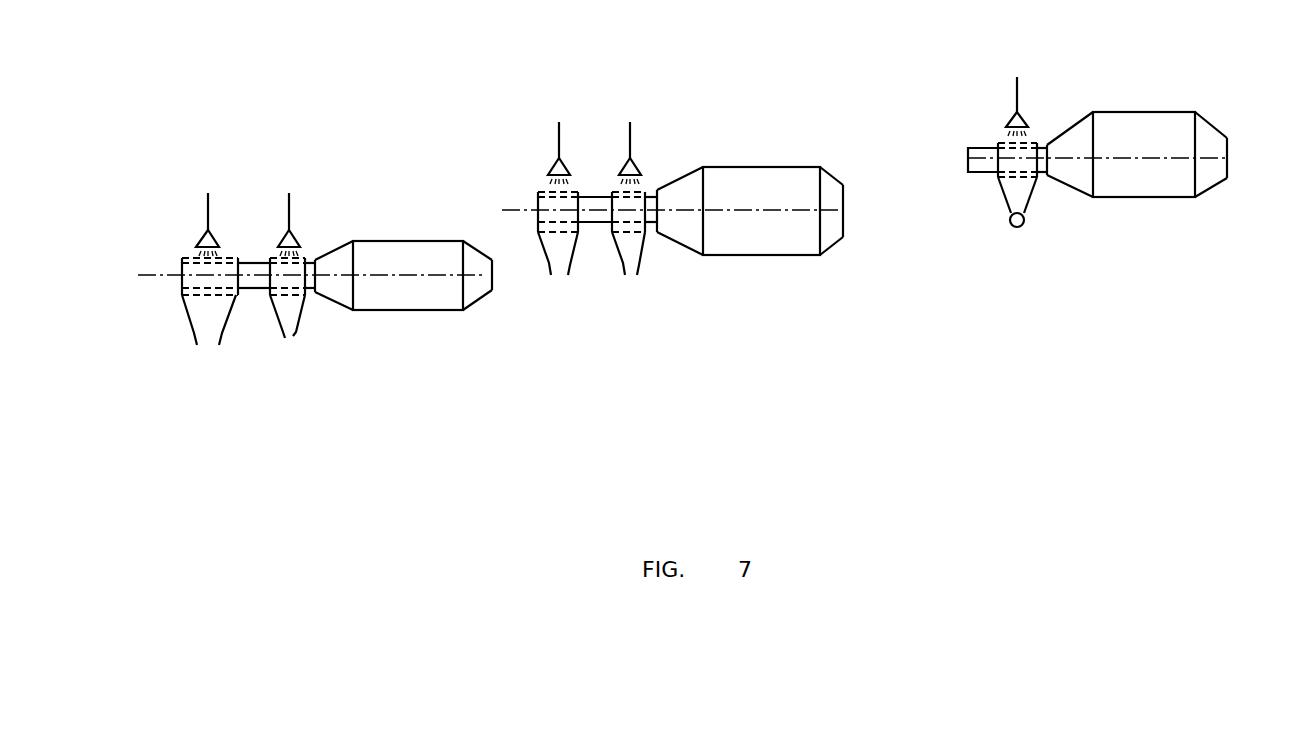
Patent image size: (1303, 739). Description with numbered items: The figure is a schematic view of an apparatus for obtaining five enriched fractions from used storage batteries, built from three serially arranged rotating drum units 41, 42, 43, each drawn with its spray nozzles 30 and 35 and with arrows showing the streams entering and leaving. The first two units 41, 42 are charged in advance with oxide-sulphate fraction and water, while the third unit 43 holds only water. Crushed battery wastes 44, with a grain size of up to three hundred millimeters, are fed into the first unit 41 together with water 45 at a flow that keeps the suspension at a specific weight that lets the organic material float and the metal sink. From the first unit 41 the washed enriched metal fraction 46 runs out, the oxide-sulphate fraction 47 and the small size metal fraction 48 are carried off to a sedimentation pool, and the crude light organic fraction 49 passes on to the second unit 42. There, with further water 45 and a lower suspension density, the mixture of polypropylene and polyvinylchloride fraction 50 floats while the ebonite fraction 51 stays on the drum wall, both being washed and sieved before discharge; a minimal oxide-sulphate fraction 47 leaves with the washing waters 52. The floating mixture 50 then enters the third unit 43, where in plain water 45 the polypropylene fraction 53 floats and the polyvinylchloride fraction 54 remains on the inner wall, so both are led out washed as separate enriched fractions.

The nozzles 30 is at (297, 229).
The nozzles 35 is at (215, 230).
The first unit 41 is at (1127, 112).
The second unit 42 is at (753, 167).
The third unit 43 is at (383, 241).
The crushed battery wastes 44 is at (1228, 140).
The water 45 is at (495, 284).
The enriched metal fraction 46 is at (997, 177).
The oxide-sulphate fraction 47 is at (633, 273).
The small size metal fraction 48 is at (1022, 227).
The light fraction (organic fraction) 49 is at (845, 205).
The mixture of polypropylene and polyvinylchloride fraction 50 is at (493, 270).
The ebonite fraction 51 is at (612, 232).
The washing waters 52 is at (212, 325).
The polypropylene fraction 53 is at (181, 292).
The polyvinylchloride fraction 54 is at (268, 293).